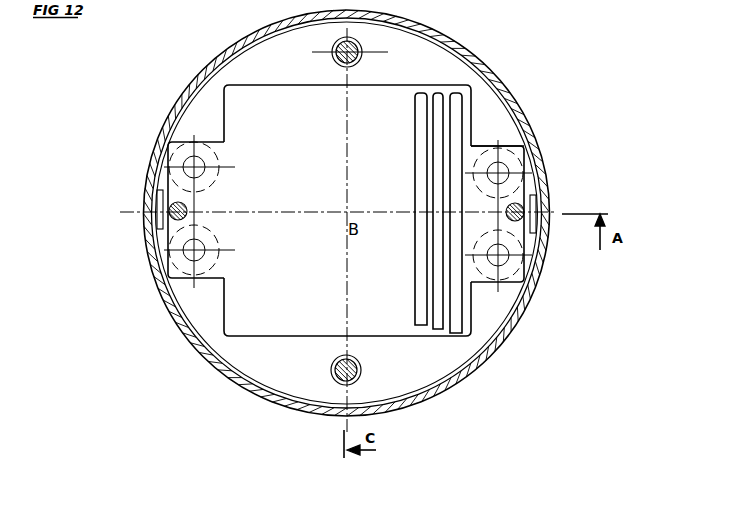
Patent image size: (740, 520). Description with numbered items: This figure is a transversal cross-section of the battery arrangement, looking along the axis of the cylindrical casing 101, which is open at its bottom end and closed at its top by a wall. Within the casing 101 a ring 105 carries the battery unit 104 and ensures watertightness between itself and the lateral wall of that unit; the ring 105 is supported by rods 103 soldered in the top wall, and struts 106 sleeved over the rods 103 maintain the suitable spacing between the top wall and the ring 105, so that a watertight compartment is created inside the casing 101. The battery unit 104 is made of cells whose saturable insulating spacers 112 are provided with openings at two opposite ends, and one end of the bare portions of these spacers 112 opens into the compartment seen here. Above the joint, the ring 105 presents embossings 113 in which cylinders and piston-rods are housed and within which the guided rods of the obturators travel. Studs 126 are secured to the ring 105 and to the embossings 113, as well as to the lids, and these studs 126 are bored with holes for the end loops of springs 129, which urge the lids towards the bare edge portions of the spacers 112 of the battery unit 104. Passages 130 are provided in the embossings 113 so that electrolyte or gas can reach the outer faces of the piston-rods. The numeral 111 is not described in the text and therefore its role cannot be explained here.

The cylindrical casing 101 is at (315, 213).
The rod 103 is at (357, 387).
The battery unit 104 is at (243, 310).
The ring 105 is at (260, 365).
The strut 106 is at (333, 380).
The slot 111 is at (452, 336).
The spacer 112 is at (430, 332).
The embossing 113 is at (515, 147).
The stud 126 is at (508, 172).
The spring 129 is at (518, 155).
The passage 130 is at (533, 237).